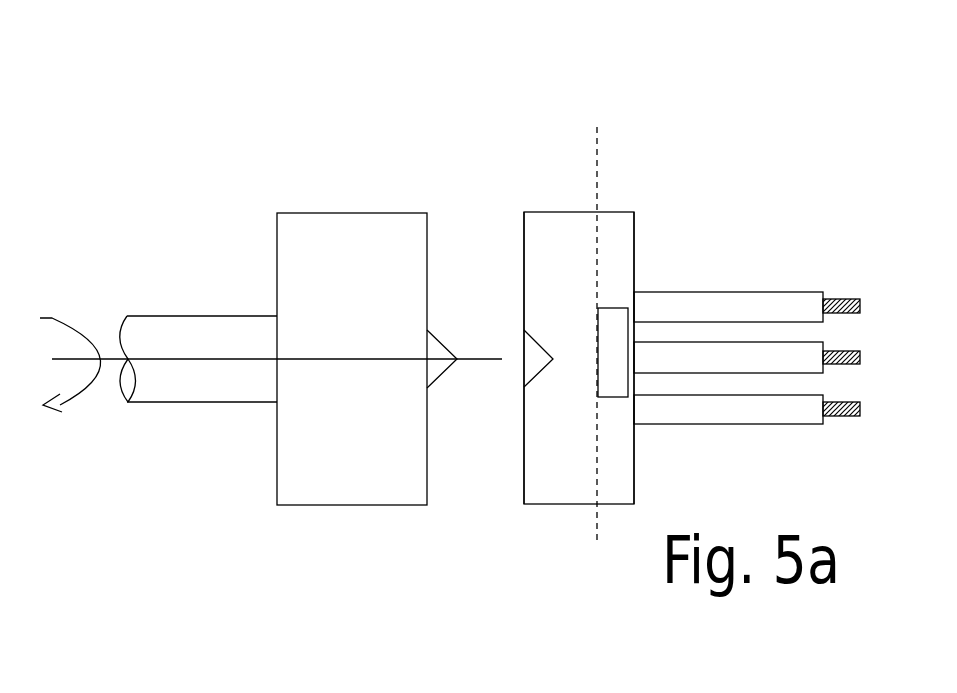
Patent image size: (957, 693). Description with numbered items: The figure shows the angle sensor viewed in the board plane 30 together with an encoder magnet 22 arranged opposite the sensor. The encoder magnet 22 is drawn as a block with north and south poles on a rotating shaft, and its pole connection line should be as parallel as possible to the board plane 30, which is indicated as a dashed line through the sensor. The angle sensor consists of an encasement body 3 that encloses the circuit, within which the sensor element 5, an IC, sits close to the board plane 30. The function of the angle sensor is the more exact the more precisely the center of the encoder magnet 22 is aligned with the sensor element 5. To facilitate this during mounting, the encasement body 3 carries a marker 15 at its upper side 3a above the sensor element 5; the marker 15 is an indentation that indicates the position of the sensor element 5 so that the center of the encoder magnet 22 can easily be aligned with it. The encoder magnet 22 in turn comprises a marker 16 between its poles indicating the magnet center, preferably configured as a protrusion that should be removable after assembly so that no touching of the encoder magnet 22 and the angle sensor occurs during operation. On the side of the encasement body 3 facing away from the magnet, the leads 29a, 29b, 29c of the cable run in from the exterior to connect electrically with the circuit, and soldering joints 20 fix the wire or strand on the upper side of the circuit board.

The encoder magnet 22 is at (297, 230).
The marker 16 is at (435, 352).
The encasement body 3 is at (540, 210).
The upper side of encasement body 3a is at (524, 235).
The marker 15 is at (532, 347).
The board plane 30 is at (597, 152).
The soldering joints 20 is at (638, 240).
The sensor element 5 is at (617, 373).
The lead 29a is at (728, 310).
The lead 29b is at (748, 362).
The lead 29c is at (698, 408).